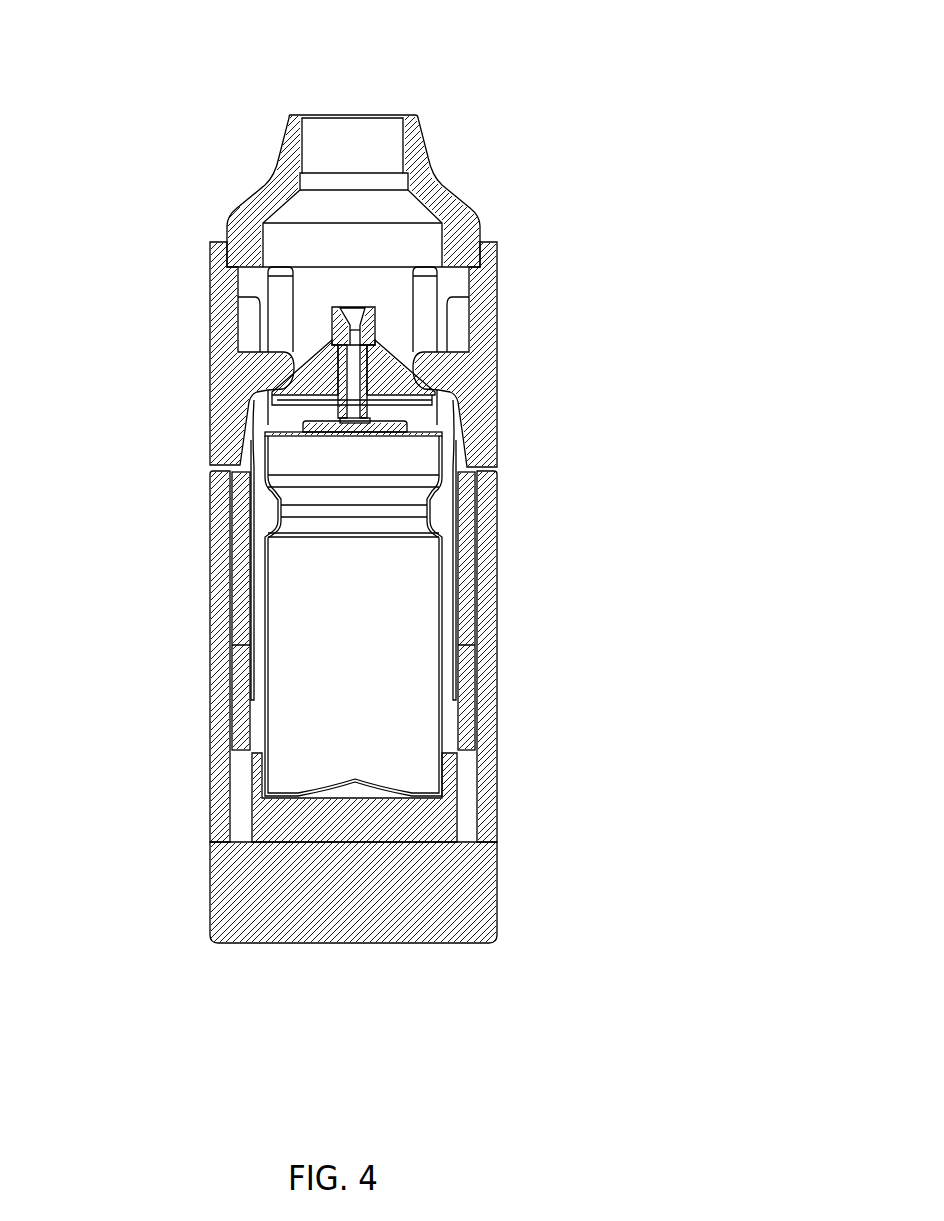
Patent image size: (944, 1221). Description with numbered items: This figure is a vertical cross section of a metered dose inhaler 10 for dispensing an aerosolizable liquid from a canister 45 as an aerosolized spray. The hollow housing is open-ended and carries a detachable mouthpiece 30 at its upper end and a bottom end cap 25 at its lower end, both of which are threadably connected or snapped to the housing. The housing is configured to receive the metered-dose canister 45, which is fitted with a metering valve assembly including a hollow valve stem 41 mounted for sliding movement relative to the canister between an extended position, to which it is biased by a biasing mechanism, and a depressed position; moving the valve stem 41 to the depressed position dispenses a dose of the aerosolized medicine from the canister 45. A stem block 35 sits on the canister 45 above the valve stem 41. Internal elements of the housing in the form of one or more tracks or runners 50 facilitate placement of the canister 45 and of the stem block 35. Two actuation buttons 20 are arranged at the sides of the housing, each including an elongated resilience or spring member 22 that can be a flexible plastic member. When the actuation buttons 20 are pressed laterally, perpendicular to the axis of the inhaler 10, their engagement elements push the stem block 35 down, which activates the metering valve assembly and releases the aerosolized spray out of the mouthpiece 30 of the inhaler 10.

The metered dose inhaler 10 is at (626, 540).
The actuation buttons 20 is at (203, 403).
The resilience or spring member 22 is at (240, 600).
The bottom end cap 25 is at (440, 898).
The mouthpiece 30 is at (413, 133).
The stem block 35 is at (375, 335).
The valve stem 41 is at (353, 400).
The canister 45 is at (410, 637).
The tracks or runners 50 is at (425, 288).